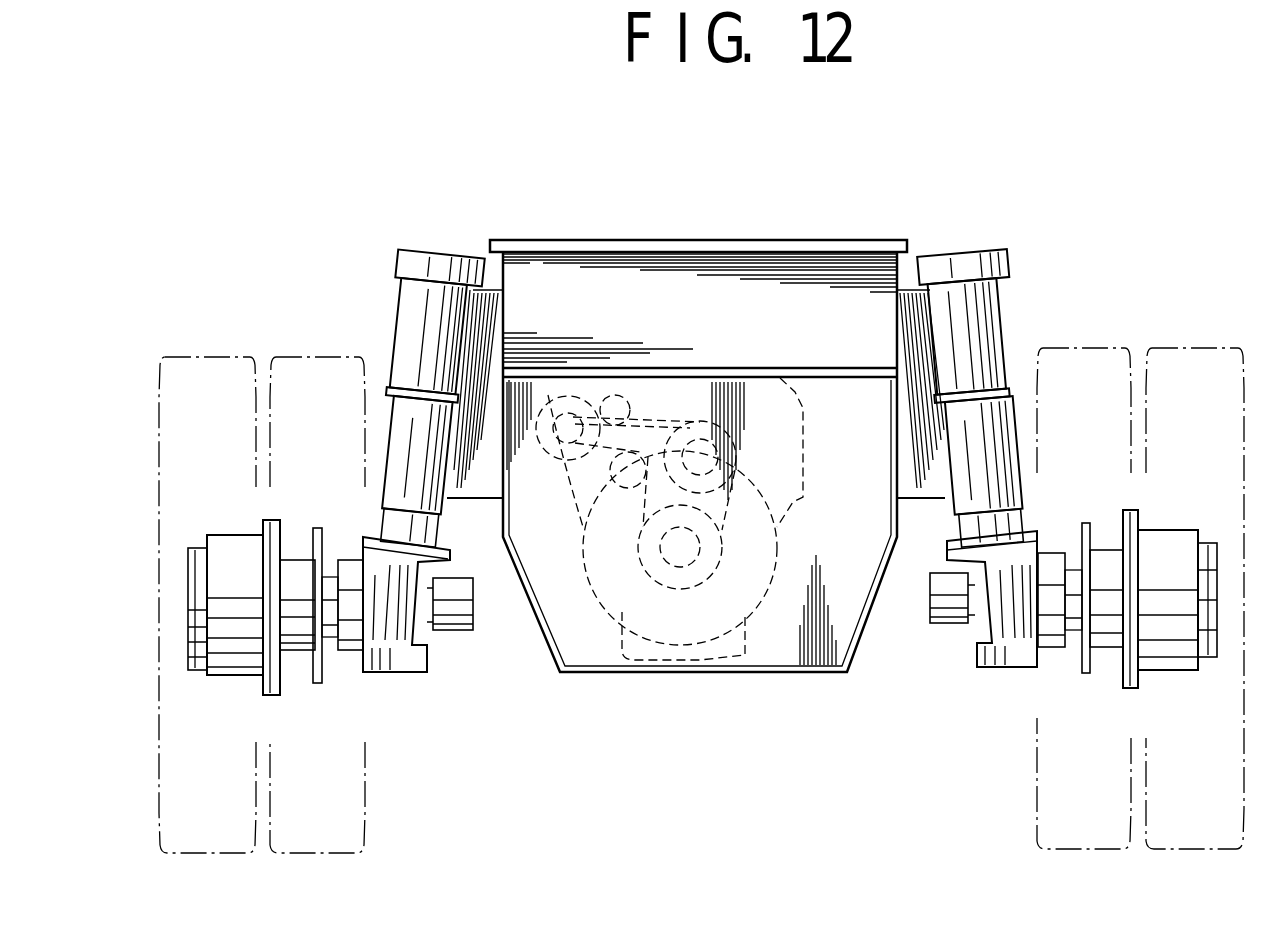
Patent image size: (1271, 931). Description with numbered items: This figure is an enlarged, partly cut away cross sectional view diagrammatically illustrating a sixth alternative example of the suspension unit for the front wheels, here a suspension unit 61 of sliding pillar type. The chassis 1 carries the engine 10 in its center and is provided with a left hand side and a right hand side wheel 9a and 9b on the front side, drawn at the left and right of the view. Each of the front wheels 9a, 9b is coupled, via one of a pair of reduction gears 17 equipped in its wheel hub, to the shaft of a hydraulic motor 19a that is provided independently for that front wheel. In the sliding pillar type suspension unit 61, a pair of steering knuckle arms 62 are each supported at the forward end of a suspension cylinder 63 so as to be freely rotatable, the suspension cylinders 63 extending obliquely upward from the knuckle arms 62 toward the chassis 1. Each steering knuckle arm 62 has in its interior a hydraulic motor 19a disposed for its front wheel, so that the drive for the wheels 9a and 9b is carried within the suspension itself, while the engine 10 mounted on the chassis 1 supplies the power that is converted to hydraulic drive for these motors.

The chassis 1 is at (788, 650).
The left hand side wheel on the front side 9a is at (1175, 360).
The right hand side wheel on the front side 9b is at (222, 362).
The engine 10 is at (797, 506).
The reduction gears 17 is at (212, 538).
The hydraulic motor 19a is at (468, 630).
The suspension unit of sliding pillar type 61 is at (1007, 653).
The steering knuckle arms 62 is at (398, 665).
The suspension cylinder 63 is at (410, 312).